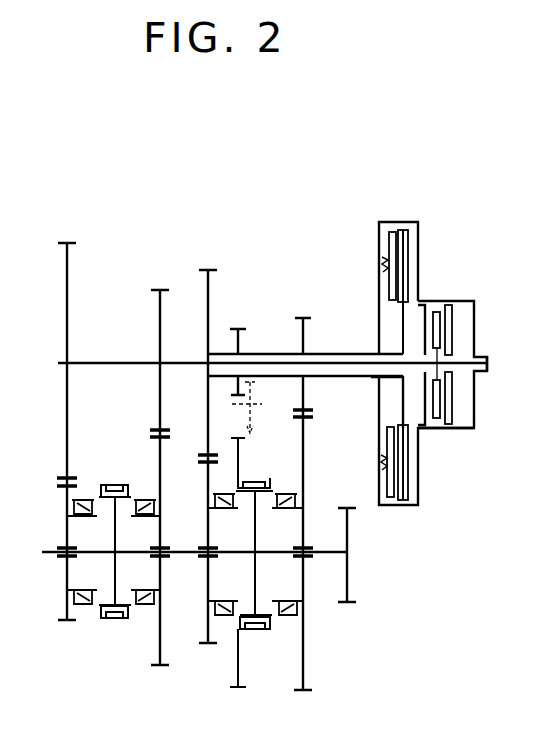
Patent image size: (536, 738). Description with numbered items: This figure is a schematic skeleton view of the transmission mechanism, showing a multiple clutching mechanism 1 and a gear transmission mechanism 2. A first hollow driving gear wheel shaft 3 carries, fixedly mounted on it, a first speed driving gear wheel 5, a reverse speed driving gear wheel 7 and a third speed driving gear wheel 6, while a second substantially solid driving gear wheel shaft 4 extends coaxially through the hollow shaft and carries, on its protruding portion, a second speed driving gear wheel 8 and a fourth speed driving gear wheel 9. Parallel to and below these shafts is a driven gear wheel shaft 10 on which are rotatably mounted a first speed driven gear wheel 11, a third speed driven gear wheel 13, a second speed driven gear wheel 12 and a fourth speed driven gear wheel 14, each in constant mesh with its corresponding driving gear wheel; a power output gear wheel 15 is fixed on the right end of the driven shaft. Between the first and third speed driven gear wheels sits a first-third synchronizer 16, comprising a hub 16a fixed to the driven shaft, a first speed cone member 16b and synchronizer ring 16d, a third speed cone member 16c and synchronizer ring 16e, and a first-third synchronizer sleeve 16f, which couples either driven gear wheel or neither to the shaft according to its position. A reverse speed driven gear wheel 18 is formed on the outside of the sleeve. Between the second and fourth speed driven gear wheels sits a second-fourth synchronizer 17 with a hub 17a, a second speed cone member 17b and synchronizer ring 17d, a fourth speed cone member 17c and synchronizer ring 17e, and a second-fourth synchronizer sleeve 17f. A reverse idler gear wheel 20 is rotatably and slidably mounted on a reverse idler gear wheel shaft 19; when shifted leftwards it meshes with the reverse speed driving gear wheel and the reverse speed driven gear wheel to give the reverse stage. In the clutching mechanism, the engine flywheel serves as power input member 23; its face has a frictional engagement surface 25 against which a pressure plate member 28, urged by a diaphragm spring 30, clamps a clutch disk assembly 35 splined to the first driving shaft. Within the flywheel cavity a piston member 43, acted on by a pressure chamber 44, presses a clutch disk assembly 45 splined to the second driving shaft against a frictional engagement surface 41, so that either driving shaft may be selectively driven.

The multiple clutching mechanism 1 is at (395, 264).
The gear transmission mechanism 2 is at (289, 450).
The first hollow driving gear wheel shaft 3 is at (288, 354).
The second driving gear wheel shaft 4 is at (110, 362).
The first speed driving gear wheel 5 is at (306, 346).
The third speed driving gear wheel 6 is at (205, 284).
The reverse speed driving gear wheel 7 is at (240, 346).
The second speed driving gear wheel 8 is at (159, 313).
The fourth speed driving gear wheel 9 is at (64, 283).
The driven gear wheel shaft 10 is at (322, 550).
The first speed driven gear wheel 11 is at (305, 437).
The second speed driven gear wheel 12 is at (163, 458).
The third speed driven gear wheel 13 is at (204, 487).
The fourth speed driven gear wheel 14 is at (62, 507).
The power output gear wheel 15 is at (349, 532).
The first-third synchronizer 16 is at (243, 578).
The hub 16a is at (254, 578).
The first speed cone member 16b is at (282, 512).
The third speed cone member 16c is at (226, 512).
The synchronizer ring 16d is at (284, 494).
The synchronizer ring 16e is at (222, 494).
The first-third synchronizer sleeve 16f is at (254, 482).
The second-fourth synchronizer 17 is at (111, 553).
The hub 17a is at (113, 574).
The second speed cone member 17b is at (138, 514).
The fourth speed cone member 17c is at (84, 514).
The synchronizer ring 17d is at (136, 500).
The synchronizer ring 17e is at (86, 500).
The second-fourth synchronizer sleeve 17f is at (112, 481).
The reverse speed driven gear wheel 18 is at (232, 399).
The reverse idler gear wheel shaft 19 is at (259, 404).
The reverse idler gear wheel 20 is at (257, 430).
The power input member 23 is at (462, 300).
The frictional engagement surface 25 is at (416, 261).
The pressure plate member 28 is at (388, 246).
The diaphragm spring 30 is at (384, 271).
The clutch disk assembly 35 is at (401, 335).
The frictional engagement surface 41 is at (425, 424).
The piston member 43 is at (442, 408).
The pressure chamber 44 is at (462, 389).
The clutch disk assembly 45 is at (444, 350).